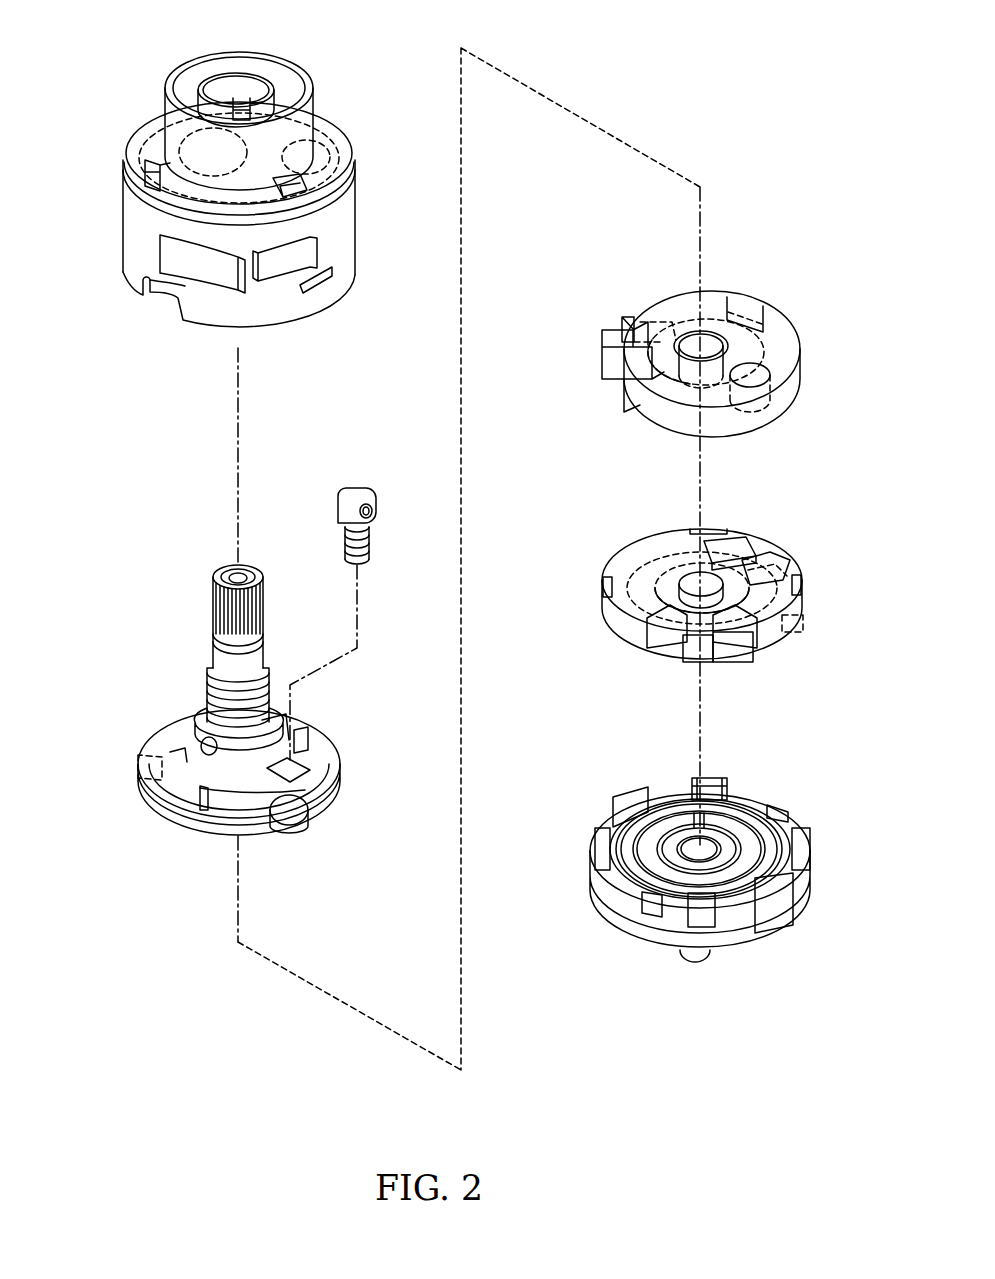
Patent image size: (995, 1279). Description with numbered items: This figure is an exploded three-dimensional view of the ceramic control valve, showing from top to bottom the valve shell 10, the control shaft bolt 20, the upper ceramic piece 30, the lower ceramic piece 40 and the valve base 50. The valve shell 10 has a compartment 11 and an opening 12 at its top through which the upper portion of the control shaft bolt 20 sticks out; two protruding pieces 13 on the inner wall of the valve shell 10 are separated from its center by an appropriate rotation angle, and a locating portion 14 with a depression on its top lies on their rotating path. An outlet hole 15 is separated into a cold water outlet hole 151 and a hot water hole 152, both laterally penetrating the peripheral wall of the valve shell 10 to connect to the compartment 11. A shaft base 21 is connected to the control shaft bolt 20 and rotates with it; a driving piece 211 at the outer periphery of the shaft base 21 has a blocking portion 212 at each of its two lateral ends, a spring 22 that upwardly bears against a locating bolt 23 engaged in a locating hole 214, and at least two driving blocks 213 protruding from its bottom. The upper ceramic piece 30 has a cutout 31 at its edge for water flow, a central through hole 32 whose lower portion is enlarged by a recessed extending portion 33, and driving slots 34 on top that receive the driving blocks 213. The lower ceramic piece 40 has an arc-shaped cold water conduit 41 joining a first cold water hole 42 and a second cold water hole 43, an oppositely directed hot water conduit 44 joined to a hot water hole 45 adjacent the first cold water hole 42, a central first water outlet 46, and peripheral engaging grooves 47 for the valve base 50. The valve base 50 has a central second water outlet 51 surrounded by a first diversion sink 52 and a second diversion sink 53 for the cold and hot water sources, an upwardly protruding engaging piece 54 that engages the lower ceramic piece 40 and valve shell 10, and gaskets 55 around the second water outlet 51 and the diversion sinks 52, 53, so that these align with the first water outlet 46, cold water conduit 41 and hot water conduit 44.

The valve shell 10 is at (242, 191).
The compartment 11 is at (337, 150).
The opening 12 is at (219, 91).
The protruding pieces 13 is at (265, 98).
The locating portion 14 is at (340, 184).
The outlet hole 15 is at (162, 254).
The cold water outlet hole 151 is at (211, 283).
The hot water hole 152 is at (307, 250).
The control shaft bolt 20 is at (237, 691).
The shaft base 21 is at (237, 765).
The driving piece 211 is at (226, 808).
The blocking portion 212 is at (318, 755).
The driving blocks 213 is at (158, 754).
The locating hole 214 is at (308, 796).
The spring 22 is at (344, 533).
The locating bolt 23 is at (360, 492).
The upper ceramic piece 30 is at (679, 366).
The cutout 31 is at (610, 373).
The through hole 32 is at (750, 363).
The extending portion 33 is at (675, 315).
The driving slots 34 is at (748, 303).
The lower ceramic piece 40 is at (678, 589).
The cold water conduit 41 is at (637, 580).
The first cold water hole 42 is at (641, 651).
The second cold water hole 43 is at (723, 545).
The hot water conduit 44 is at (786, 618).
The hot water hole 45 is at (715, 650).
The first water outlet 46 is at (700, 578).
The engaging grooves 47 is at (795, 570).
The valve base 50 is at (696, 887).
The second water outlet 51 is at (700, 846).
The first diversion sink 52 is at (643, 846).
The second diversion sink 53 is at (770, 836).
The engaging piece 54 is at (776, 878).
The gaskets 55 is at (735, 822).